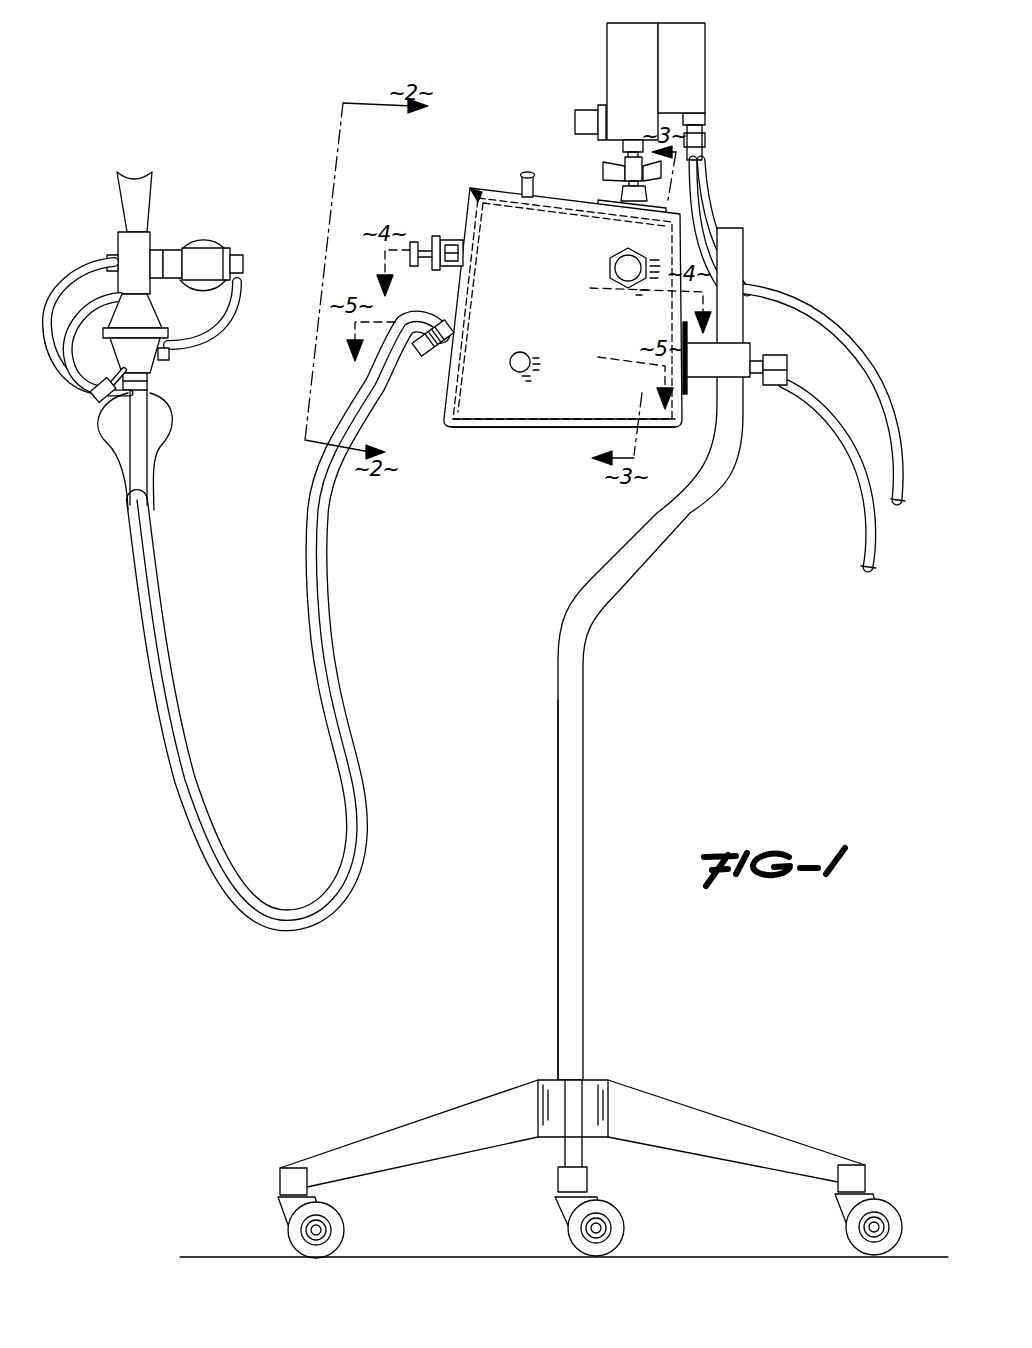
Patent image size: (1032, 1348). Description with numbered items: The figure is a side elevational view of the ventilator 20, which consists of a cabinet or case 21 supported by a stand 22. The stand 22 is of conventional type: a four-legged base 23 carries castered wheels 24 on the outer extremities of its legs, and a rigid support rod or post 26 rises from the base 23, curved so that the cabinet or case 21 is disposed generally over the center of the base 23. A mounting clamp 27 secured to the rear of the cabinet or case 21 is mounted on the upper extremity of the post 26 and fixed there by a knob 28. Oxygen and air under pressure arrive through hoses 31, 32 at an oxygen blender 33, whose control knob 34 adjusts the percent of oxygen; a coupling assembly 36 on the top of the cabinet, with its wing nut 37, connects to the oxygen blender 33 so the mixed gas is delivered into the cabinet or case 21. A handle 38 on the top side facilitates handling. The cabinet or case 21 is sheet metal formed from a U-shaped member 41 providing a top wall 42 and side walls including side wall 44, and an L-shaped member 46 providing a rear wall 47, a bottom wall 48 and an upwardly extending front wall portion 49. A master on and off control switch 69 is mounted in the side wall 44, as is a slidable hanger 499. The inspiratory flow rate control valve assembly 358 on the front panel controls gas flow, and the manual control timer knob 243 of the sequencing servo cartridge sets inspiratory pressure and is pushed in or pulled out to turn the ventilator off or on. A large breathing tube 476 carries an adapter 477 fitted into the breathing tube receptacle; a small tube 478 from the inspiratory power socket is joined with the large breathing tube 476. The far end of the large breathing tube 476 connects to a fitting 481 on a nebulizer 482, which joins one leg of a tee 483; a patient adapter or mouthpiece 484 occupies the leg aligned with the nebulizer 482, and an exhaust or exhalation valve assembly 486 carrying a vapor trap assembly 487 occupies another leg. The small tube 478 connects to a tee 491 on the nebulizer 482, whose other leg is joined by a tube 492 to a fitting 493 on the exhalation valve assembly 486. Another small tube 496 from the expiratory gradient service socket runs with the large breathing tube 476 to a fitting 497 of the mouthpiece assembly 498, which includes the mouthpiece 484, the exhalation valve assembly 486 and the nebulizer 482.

The ventilator 20 is at (545, 124).
The cabinet or case 21 is at (478, 436).
The stand 22 is at (590, 806).
The four-legged base 23 is at (716, 1123).
The castered wheels 24 is at (344, 1230).
The support rod or post 26 is at (585, 720).
The mounting clamp 27 is at (712, 375).
The knob 28 is at (790, 366).
The hose 31 is at (812, 305).
The hose 32 is at (828, 405).
The oxygen blender 33 is at (702, 78).
The control knob 34 is at (584, 112).
The coupling assembly 36 is at (620, 197).
The wing nut 37 is at (612, 173).
The handle 38 is at (530, 172).
The U-shaped member 41 is at (468, 185).
The top wall 42 is at (492, 192).
The side wall 44 is at (488, 236).
The L-shaped member 46 is at (534, 438).
The rear wall 47 is at (695, 238).
The bottom wall 48 is at (504, 429).
The front wall portion 49 is at (443, 432).
The master on and off control switch 69 is at (613, 270).
The manual control timer knob 243 is at (414, 241).
The inspiratory flow rate control valve assembly 358 is at (470, 257).
The large breathing tube 476 is at (134, 440).
The adapter 477 is at (441, 326).
The small tube 478 is at (318, 680).
The fitting 481 is at (153, 388).
The nebulizer 482 is at (150, 320).
The tee 483 is at (128, 240).
The patient adapter or mouthpiece 484 is at (136, 178).
The exhaust or exhalation valve assembly 486 is at (196, 250).
The vapor trap assembly 487 is at (213, 245).
The tee 491 is at (96, 395).
The tube 492 is at (240, 314).
The fitting 493 is at (245, 262).
The small tube 496 is at (56, 290).
The fitting 497 is at (116, 257).
The mouthpiece assembly 498 is at (161, 184).
The hanger 499 is at (525, 352).